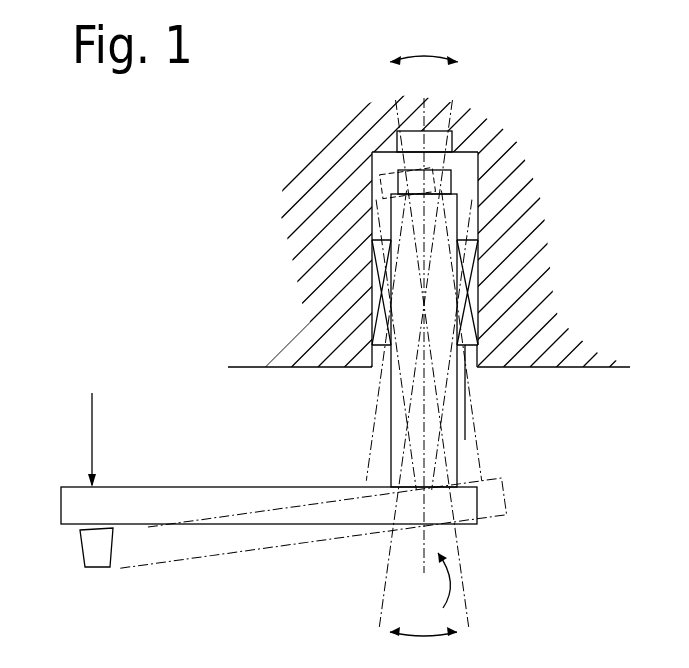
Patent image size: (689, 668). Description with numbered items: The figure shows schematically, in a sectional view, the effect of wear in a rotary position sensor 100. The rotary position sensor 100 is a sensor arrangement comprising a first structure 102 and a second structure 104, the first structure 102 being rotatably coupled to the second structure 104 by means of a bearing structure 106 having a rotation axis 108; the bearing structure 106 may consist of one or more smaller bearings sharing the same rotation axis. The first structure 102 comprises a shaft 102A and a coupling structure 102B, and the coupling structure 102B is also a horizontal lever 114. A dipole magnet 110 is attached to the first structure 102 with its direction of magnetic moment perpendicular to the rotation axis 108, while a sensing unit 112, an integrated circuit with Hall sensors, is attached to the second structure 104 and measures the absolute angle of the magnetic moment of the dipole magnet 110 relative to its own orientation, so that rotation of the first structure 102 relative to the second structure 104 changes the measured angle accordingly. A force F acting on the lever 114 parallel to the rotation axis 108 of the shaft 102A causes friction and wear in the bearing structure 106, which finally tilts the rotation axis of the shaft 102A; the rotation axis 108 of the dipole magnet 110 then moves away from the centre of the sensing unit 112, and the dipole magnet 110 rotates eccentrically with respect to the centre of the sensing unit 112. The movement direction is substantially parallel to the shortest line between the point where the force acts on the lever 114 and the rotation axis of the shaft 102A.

The rotary position sensor 100 is at (368, 318).
The first structure 102 is at (314, 363).
The shaft 102A is at (391, 428).
The coupling structure 102B is at (203, 526).
The second structure 104 is at (553, 367).
The bearing structure 106 is at (465, 372).
The rotation axis 108 is at (425, 562).
The dipole magnet 110 is at (374, 182).
The sensing unit 112 is at (452, 130).
The horizontal lever 114 is at (110, 567).